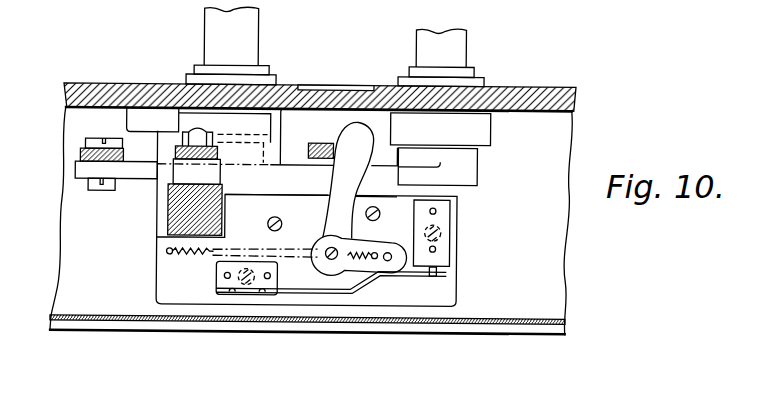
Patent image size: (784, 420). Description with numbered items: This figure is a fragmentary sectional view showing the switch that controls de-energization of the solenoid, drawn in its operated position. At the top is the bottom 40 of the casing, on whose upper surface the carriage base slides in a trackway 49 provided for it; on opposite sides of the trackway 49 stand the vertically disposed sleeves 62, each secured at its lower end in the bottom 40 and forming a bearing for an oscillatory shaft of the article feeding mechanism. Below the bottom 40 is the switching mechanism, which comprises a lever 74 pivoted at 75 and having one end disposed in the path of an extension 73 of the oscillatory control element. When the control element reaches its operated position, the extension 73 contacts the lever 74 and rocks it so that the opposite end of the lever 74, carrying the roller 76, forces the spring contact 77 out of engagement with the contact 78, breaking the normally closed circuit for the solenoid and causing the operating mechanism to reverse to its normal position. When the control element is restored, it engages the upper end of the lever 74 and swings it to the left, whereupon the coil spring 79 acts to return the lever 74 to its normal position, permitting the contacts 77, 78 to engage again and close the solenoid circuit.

The bottom 40 is at (523, 85).
The sleeve 62 is at (245, 35).
The trackway 49 is at (338, 85).
The extension 73 is at (318, 143).
The lever 74 is at (345, 182).
The pivot 75 is at (326, 247).
The roller 76 is at (390, 245).
The spring contact 77 is at (372, 280).
The contact 78 is at (450, 262).
The coil spring 79 is at (232, 248).